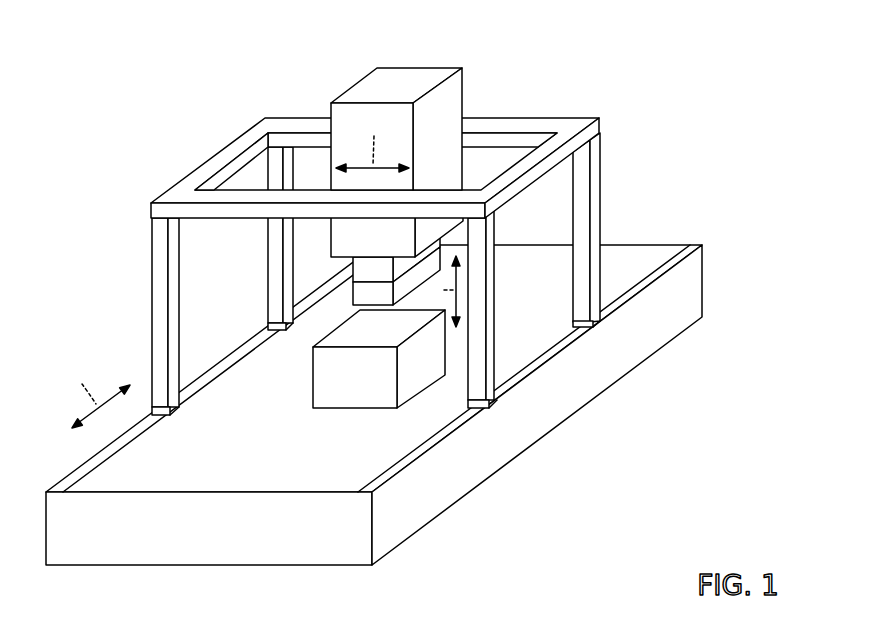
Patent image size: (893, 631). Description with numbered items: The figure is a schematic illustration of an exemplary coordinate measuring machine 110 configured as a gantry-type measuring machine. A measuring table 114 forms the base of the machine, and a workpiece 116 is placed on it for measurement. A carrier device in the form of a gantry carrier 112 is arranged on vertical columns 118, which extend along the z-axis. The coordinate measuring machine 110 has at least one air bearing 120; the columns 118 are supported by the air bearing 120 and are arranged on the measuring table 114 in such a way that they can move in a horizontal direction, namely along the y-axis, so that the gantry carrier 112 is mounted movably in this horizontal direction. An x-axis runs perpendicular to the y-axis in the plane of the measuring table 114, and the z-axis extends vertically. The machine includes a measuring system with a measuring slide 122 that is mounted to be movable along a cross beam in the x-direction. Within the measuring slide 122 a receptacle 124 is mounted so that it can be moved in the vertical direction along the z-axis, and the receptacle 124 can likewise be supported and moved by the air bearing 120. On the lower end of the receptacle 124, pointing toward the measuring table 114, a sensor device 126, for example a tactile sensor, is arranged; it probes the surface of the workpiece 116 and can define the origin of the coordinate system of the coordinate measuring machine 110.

The coordinate measuring machine 110 is at (429, 286).
The gantry carrier 112 is at (512, 116).
The measuring table 114 is at (476, 503).
The workpiece 116 is at (410, 370).
The vertical columns 118 is at (598, 210).
The air bearing 120 is at (176, 412).
The measuring slide 122 is at (375, 131).
The receptacle 124 is at (350, 263).
The sensor device 126 is at (373, 303).